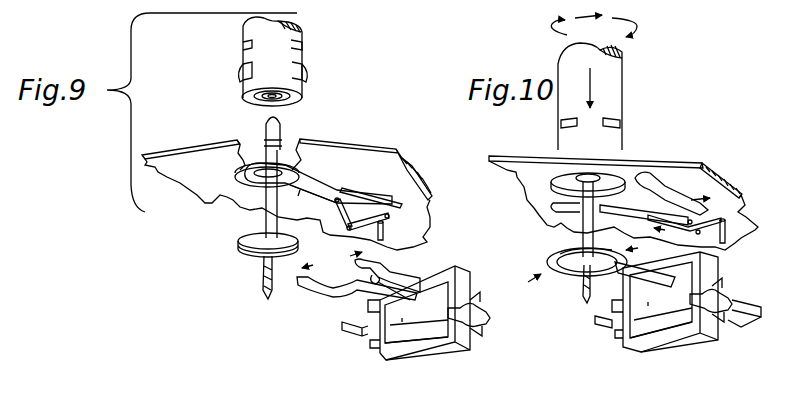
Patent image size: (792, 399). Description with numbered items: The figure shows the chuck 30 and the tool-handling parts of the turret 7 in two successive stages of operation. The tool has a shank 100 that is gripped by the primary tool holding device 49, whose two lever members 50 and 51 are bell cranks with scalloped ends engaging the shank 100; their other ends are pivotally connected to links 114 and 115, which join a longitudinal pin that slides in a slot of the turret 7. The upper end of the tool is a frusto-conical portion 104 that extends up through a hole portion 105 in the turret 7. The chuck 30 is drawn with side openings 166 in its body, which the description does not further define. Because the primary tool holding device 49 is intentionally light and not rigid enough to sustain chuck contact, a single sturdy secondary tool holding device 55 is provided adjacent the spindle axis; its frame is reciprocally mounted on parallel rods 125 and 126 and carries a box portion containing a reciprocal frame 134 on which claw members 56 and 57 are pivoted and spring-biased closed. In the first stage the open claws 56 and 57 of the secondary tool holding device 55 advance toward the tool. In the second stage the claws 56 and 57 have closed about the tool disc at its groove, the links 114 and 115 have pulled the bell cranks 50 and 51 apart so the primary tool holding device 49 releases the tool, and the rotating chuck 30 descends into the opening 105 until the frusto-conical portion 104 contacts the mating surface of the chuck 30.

In FIG. 9, the turret 7 is at (405, 192).
In FIG. 10, the turret 7 is at (668, 165).
In FIG. 9, the chuck 30 is at (330, 98).
In FIG. 10, the chuck 30 is at (652, 139).
In FIG. 9, the primary tool holding device 49 is at (325, 182).
In FIG. 9, the lever member 50 is at (300, 190).
In FIG. 9, the lever member 51 is at (328, 193).
In FIG. 9, the secondary tool holding device 55 is at (434, 358).
In FIG. 10, the secondary tool holding device 55 is at (675, 340).
In FIG. 9, the claw member 56 is at (318, 293).
In FIG. 9, the claw member 57 is at (388, 268).
In FIG. 9, the shank 100 is at (265, 224).
In FIG. 10, the shank 100 is at (583, 240).
In FIG. 9, the frusto-conical portion 104 is at (270, 134).
In FIG. 9, the hole portion 105 is at (240, 183).
In FIG. 10, the hole portion 105 is at (567, 182).
In FIG. 9, the link 114 is at (343, 216).
In FIG. 10, the link 114 is at (701, 235).
In FIG. 9, the link 115 is at (383, 198).
In FIG. 10, the link 115 is at (740, 208).
In FIG. 9, the parallel rod 125 is at (348, 334).
In FIG. 9, the parallel rod 126 is at (490, 326).
In FIG. 10, the parallel rod 126 is at (736, 308).
In FIG. 9, the reciprocal frame 134 is at (426, 325).
In FIG. 10, the reciprocal frame 134 is at (671, 310).
In FIG. 9, the slots 166 is at (243, 72).